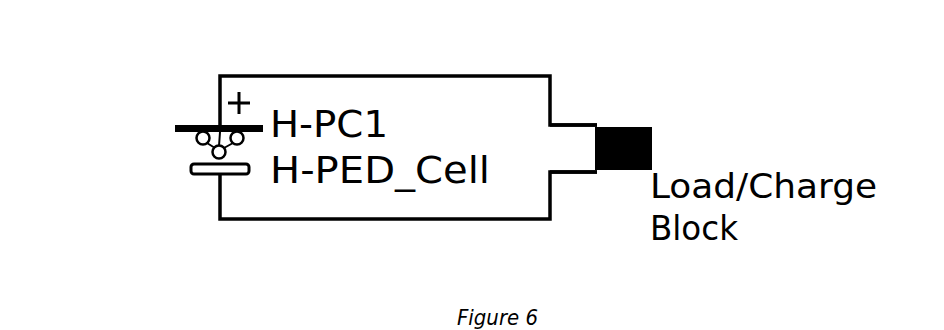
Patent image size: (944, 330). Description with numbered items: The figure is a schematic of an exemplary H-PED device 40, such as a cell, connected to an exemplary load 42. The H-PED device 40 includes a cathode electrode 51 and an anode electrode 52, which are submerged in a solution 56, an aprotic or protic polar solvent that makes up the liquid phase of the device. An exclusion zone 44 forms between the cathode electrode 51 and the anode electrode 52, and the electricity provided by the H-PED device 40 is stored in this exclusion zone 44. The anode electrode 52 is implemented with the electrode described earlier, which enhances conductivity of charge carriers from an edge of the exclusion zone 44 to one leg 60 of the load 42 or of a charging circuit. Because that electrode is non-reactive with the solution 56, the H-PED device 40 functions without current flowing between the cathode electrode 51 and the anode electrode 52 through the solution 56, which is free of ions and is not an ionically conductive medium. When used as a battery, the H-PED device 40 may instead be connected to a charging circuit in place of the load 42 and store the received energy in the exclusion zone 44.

The H-PED device 40 is at (108, 100).
The anode electrode 52 is at (193, 126).
The exclusion zone 44 is at (193, 143).
The solution 56 is at (174, 149).
The cathode electrode 51 is at (193, 174).
The leg of the load 60 is at (567, 123).
The load 42 is at (641, 125).